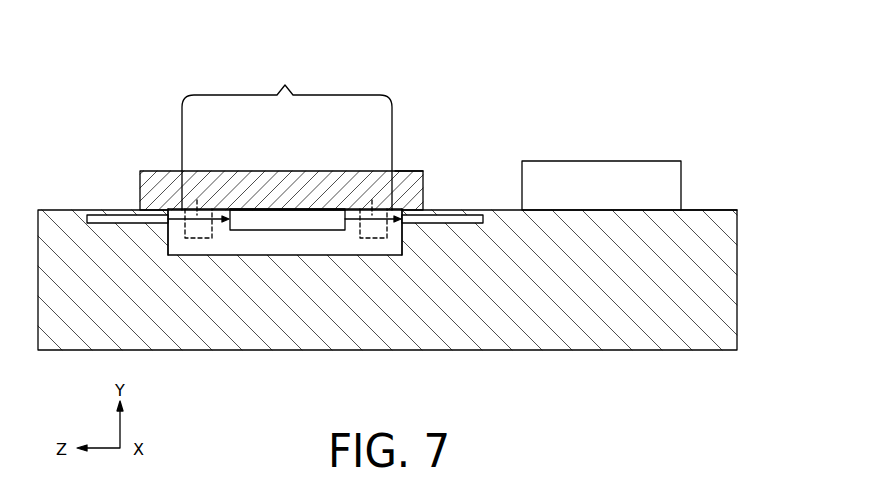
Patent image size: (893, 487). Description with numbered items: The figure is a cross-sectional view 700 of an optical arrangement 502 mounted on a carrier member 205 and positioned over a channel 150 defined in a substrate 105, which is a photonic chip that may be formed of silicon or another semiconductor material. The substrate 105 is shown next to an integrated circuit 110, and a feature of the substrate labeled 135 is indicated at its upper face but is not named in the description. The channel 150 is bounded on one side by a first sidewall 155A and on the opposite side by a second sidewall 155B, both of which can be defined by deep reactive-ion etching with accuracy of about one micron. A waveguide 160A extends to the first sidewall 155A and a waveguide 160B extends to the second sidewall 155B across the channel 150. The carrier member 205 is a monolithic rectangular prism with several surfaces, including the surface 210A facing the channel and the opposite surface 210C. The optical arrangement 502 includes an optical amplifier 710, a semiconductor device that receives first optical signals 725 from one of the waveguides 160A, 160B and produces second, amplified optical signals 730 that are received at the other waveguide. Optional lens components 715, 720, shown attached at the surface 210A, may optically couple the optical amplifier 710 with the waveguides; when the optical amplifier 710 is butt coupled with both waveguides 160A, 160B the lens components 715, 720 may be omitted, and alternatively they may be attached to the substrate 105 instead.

The cross-sectional view 700 is at (606, 74).
The optical arrangement 502 is at (287, 135).
The lens component 715 is at (197, 210).
The carrier member 205 is at (288, 171).
The lens component 720 is at (372, 212).
The optical amplifier 710 is at (254, 216).
The surface 210A is at (345, 210).
The surface 210C is at (408, 171).
The waveguide 160B is at (92, 215).
The waveguide 160A is at (458, 215).
The substrate top surface 135 is at (703, 206).
The integrated circuit 110 is at (622, 197).
The substrate 105 is at (635, 350).
The channel 150 is at (287, 242).
The first optical signals 725 is at (212, 221).
The second optical signals 730 is at (344, 222).
The second sidewall 155B is at (168, 238).
The first sidewall 155A is at (402, 238).